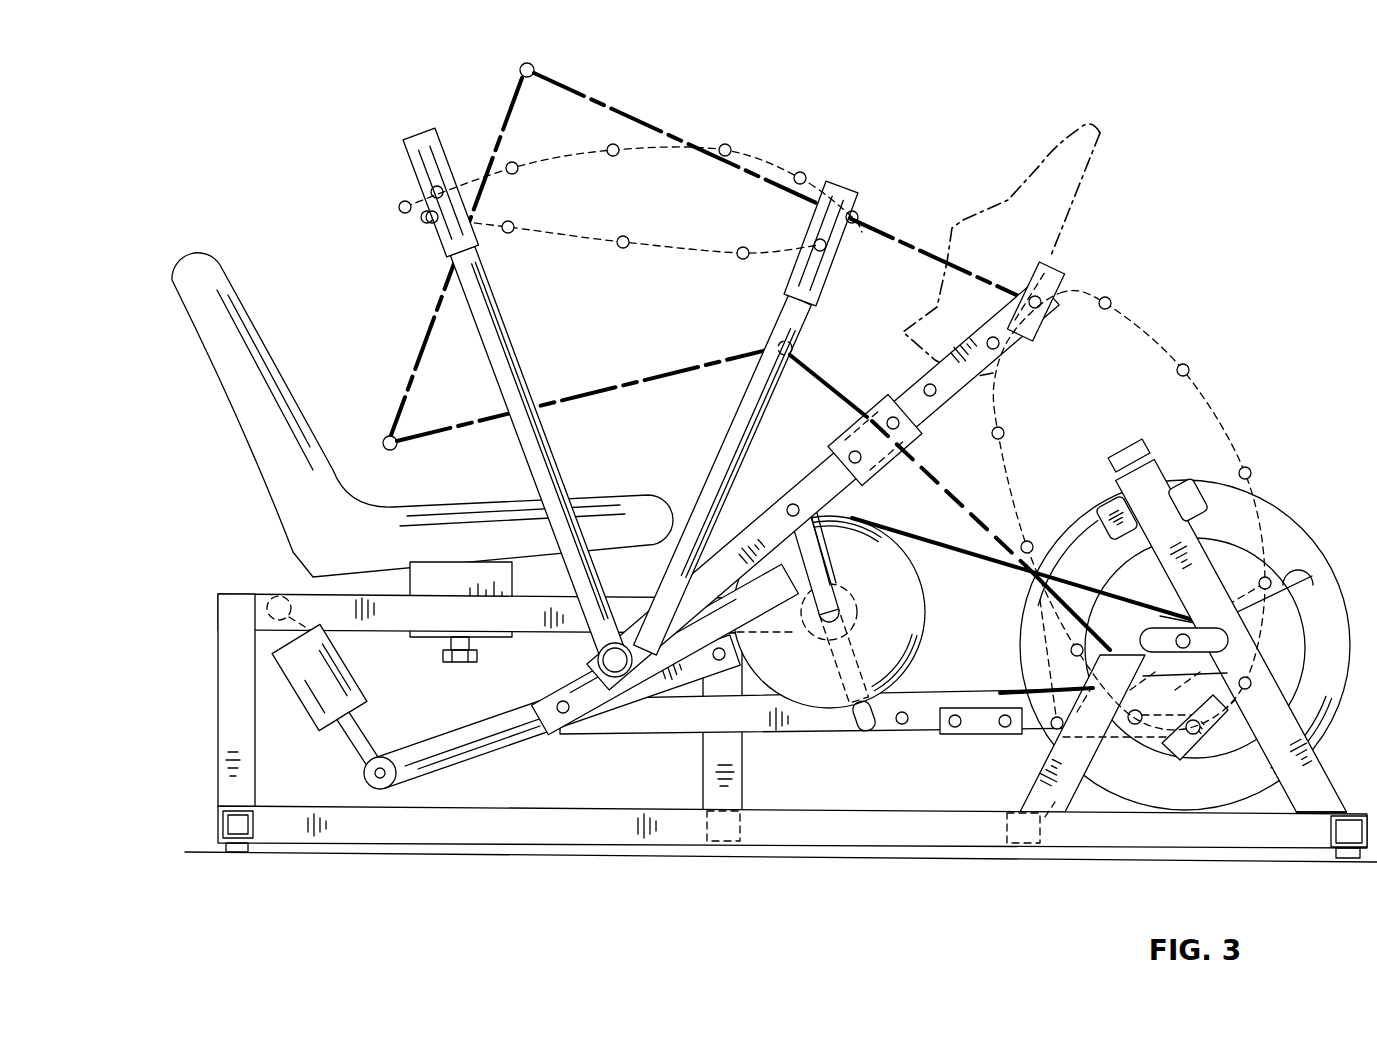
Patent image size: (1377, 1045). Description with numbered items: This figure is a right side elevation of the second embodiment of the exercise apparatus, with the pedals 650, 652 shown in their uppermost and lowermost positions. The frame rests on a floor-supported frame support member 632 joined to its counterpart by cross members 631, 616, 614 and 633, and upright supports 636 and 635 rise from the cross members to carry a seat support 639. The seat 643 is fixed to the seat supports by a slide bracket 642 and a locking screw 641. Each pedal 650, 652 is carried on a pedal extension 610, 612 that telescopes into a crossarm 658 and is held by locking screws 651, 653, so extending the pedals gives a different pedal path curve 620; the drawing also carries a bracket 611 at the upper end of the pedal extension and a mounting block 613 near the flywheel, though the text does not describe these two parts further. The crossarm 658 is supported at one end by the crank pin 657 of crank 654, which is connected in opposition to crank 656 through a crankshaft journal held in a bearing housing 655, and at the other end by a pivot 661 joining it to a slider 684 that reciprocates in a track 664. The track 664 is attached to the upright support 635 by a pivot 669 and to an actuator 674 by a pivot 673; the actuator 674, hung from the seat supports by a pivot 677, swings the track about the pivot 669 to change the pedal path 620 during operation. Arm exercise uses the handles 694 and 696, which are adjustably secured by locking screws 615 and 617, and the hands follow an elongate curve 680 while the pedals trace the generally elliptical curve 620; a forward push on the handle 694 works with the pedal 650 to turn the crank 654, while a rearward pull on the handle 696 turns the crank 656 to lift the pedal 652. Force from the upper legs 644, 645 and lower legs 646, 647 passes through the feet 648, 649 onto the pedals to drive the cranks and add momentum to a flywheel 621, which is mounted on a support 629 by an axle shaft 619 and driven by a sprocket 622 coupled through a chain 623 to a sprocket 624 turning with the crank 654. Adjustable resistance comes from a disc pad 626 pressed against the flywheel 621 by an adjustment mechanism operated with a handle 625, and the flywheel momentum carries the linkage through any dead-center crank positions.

The pedal extension 610 is at (947, 333).
The upper bracket 611 is at (1057, 287).
The pedal extension 612 is at (1022, 688).
The mounting block 613 is at (1195, 745).
The cross member 614 is at (1040, 848).
The locking screw 615 is at (640, 640).
The cross member 616 is at (722, 843).
The locking screw 617 is at (648, 735).
The axle shaft 619 is at (1165, 630).
The pedal path curve 620 is at (1133, 322).
The flywheel 621 is at (1265, 495).
The sprocket 622 is at (1173, 613).
The chain 623 is at (1005, 565).
The sprocket 624 is at (885, 628).
The handle 625 is at (1127, 447).
The disc pad 626 is at (1113, 507).
The support 629 is at (1297, 805).
The cross member 631 is at (235, 843).
The frame support member 632 is at (532, 843).
The cross member 633 is at (1347, 843).
The upright support 635 is at (742, 778).
The upright support 636 is at (258, 748).
The seat support 639 is at (279, 593).
The locking screw 641 is at (478, 655).
The slide bracket 642 is at (457, 590).
The seat 643 is at (228, 272).
The upper leg 644 is at (437, 312).
The upper leg 645 is at (695, 364).
The lower leg 646 is at (693, 152).
The lower leg 647 is at (827, 378).
The foot 648 is at (1090, 166).
The foot 649 is at (1285, 575).
The pedal 650 is at (1062, 253).
The locking screw 651 is at (900, 457).
The pedal 652 is at (1195, 735).
The locking screw 653 is at (955, 735).
The crank 654 is at (822, 566).
The bearing housing 655 is at (855, 600).
The crank 656 is at (835, 657).
The crank pin 657 is at (790, 508).
The crossarm 658 is at (828, 457).
The pivot 661 is at (557, 740).
The track 664 is at (443, 763).
The pivot 669 is at (713, 717).
The pivot 673 is at (378, 758).
The actuator 674 is at (343, 663).
The pivot 677 is at (268, 600).
The elongate curve 680 is at (780, 248).
The slider 684 is at (547, 700).
The handle 694 is at (503, 325).
The handle 696 is at (733, 427).